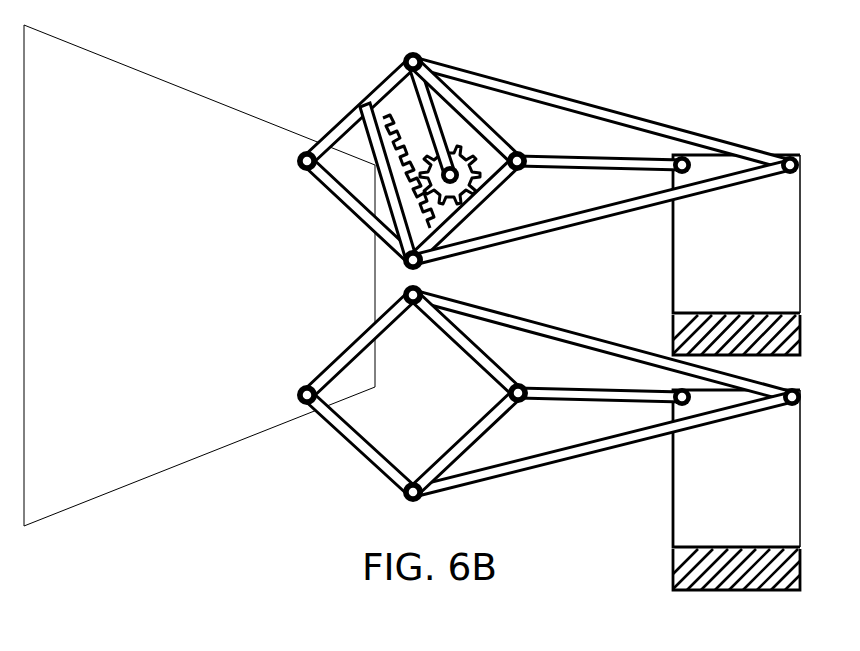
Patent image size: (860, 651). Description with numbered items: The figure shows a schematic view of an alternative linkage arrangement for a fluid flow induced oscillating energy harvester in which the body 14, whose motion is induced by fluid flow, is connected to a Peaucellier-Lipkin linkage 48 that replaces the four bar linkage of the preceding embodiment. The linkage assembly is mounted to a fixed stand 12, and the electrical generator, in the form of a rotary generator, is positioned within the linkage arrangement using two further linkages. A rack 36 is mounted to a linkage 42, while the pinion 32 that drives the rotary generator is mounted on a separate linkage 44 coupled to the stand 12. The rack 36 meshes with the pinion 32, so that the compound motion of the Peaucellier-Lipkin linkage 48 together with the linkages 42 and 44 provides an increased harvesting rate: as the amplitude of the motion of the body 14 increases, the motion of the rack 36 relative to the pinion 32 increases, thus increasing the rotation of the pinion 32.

The stand 12 is at (672, 262).
The body 14 is at (176, 86).
The pinion 32 is at (473, 189).
The rack 36 is at (413, 133).
The linkage 42 is at (405, 238).
The linkage 44 is at (447, 95).
The Peaucellier-Lipkin linkage 48 is at (548, 238).